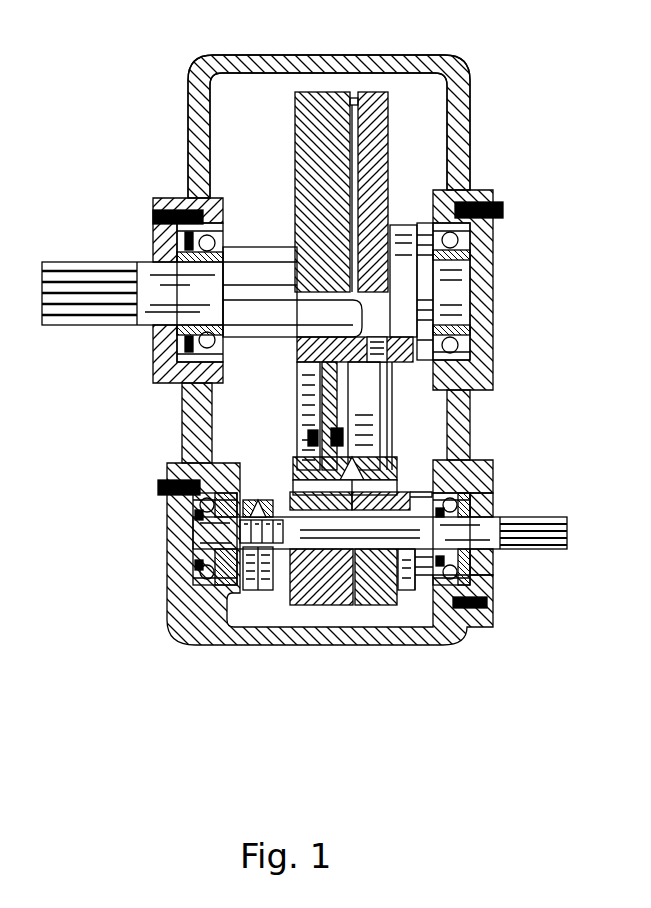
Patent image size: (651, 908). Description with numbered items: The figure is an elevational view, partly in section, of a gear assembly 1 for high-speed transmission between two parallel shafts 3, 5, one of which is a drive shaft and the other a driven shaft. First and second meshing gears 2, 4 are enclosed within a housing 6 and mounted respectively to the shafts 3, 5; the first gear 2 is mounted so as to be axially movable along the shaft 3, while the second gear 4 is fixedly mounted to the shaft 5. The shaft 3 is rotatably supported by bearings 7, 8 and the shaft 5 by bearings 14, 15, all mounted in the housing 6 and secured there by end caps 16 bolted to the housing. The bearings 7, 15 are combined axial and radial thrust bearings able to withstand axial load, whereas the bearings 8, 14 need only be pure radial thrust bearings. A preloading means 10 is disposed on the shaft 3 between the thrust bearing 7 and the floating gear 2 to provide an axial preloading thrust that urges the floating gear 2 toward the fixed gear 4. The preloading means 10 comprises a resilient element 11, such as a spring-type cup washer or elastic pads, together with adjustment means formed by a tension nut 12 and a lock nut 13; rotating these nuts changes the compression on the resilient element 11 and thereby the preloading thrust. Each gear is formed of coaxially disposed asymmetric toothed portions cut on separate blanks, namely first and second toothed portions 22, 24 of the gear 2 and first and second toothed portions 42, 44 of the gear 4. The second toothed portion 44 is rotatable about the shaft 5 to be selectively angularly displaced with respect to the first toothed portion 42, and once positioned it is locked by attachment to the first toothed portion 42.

The gear assembly 1 is at (487, 63).
The first gear 2 is at (362, 609).
The shaft 3 is at (543, 519).
The second gear 4 is at (375, 93).
The shaft 5 is at (84, 328).
The housing 6 is at (470, 128).
The bearing 7 is at (190, 640).
The bearing 8 is at (493, 580).
The preloading means 10 is at (255, 597).
The resilient element 11 is at (274, 575).
The tension nut 12 is at (268, 500).
The lock nut 13 is at (255, 500).
The bearing 14 is at (224, 350).
The bearing 15 is at (482, 262).
The end cap 16 is at (493, 328).
The first toothed portion 22 is at (334, 604).
The second toothed portion 24 is at (415, 604).
The first toothed portion 42 is at (295, 165).
The second toothed portion 44 is at (389, 160).